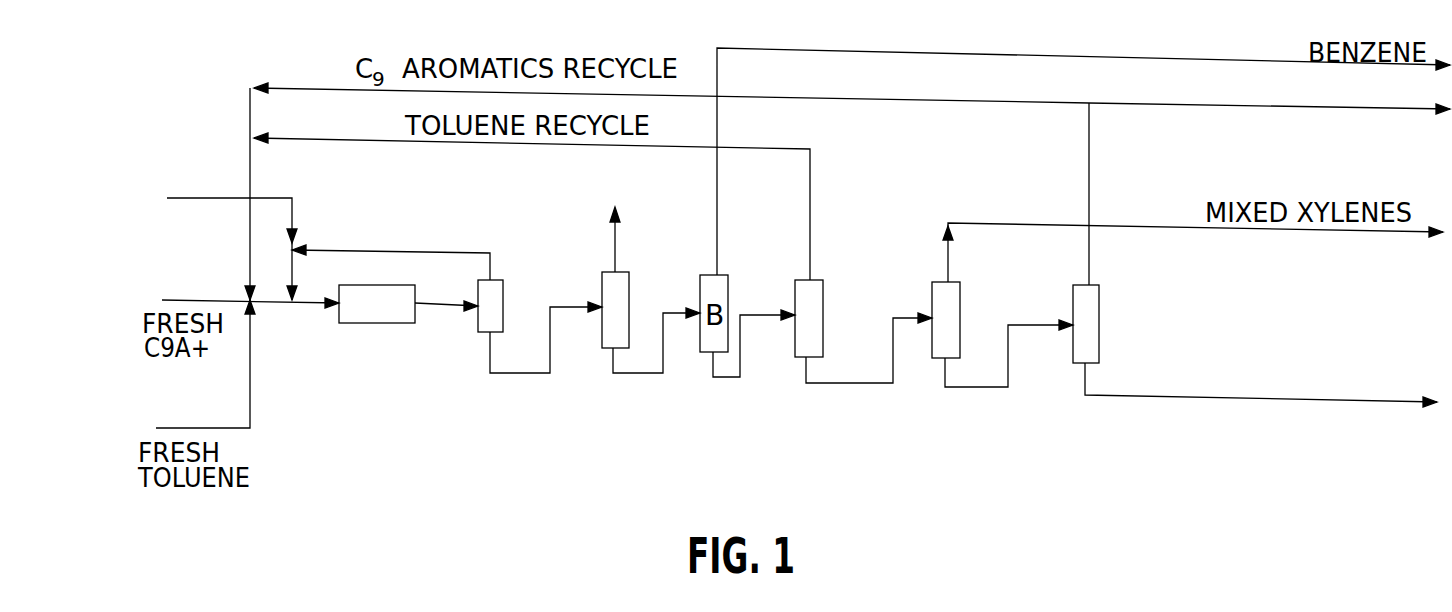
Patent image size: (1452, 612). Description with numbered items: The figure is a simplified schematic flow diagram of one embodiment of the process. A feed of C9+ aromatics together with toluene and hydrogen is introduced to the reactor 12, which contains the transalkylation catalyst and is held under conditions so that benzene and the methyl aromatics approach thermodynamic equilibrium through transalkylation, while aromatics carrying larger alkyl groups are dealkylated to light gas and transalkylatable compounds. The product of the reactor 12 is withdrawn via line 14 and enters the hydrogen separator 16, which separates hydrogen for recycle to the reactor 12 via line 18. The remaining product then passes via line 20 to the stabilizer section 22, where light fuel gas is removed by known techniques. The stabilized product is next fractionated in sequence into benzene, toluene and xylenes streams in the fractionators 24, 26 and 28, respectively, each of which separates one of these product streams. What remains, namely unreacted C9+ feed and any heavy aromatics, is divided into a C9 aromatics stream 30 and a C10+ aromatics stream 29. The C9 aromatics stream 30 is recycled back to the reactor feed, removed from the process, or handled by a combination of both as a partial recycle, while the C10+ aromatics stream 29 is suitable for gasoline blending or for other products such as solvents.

The reactor 12 is at (350, 323).
The line 14 is at (437, 308).
The hydrogen separator 16 is at (503, 304).
The line 18 is at (468, 252).
The line 20 is at (500, 373).
The stabilizer section 22 is at (629, 301).
The fractionator 24 is at (700, 336).
The fractionator 26 is at (823, 296).
The fractionator 28 is at (960, 285).
The C10+ aromatics stream 29 is at (1212, 398).
The C9 aromatics stream 30 is at (946, 98).